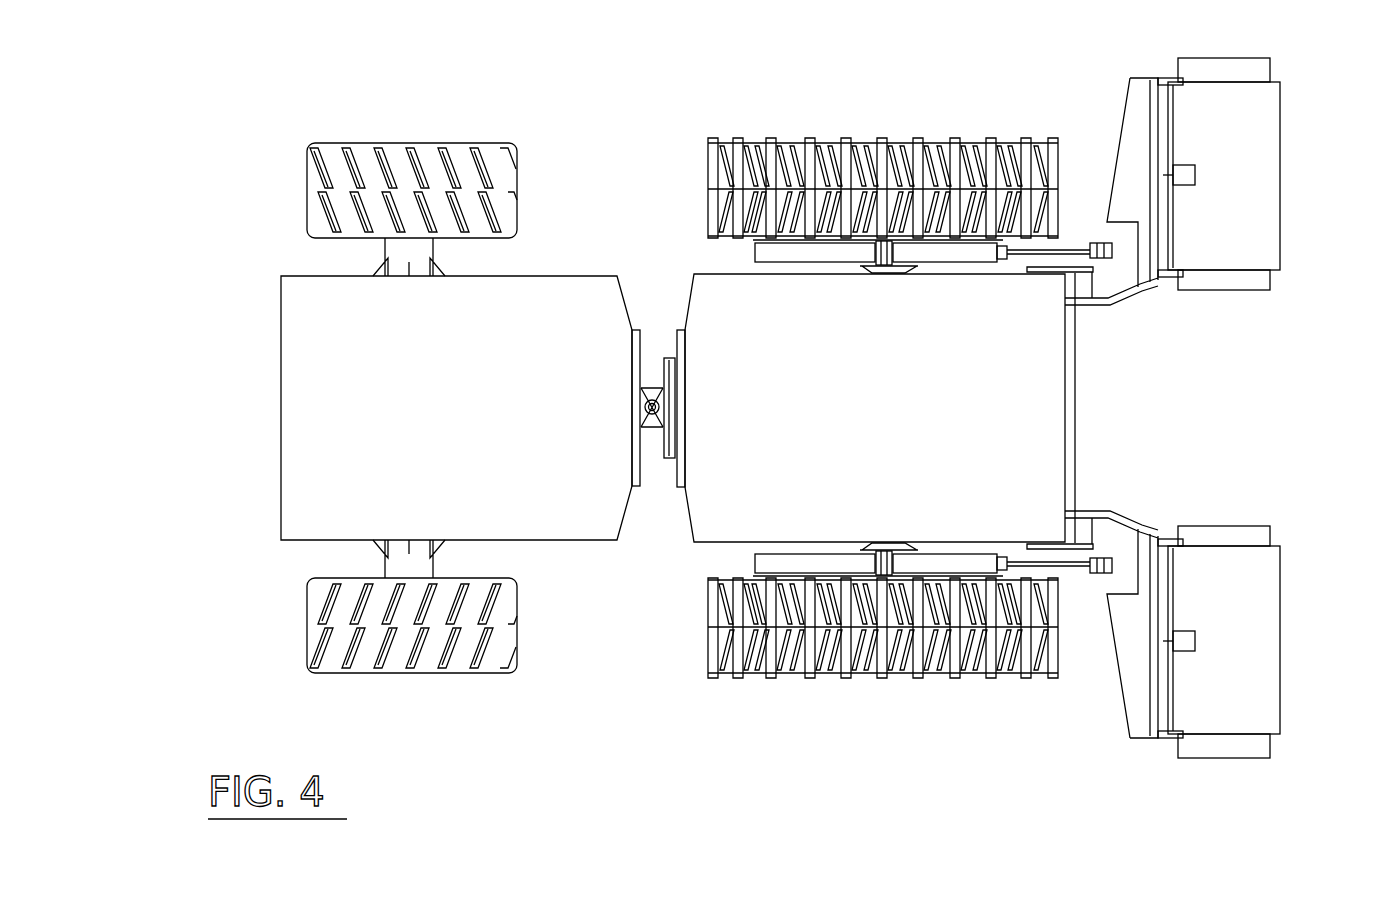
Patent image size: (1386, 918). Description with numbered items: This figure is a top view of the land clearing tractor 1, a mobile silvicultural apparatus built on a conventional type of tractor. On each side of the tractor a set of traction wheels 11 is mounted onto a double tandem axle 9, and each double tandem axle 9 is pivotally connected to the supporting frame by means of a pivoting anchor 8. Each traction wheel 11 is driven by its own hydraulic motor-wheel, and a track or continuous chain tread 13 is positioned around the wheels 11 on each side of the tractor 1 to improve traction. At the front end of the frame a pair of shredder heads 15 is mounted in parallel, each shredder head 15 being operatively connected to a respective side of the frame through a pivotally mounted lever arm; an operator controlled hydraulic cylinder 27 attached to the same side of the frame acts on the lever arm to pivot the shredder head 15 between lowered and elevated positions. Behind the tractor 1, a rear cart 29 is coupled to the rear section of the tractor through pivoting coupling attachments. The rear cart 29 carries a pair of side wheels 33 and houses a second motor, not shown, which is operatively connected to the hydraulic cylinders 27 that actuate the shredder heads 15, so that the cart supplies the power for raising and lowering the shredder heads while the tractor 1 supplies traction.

The land clearing tractor 1 is at (960, 460).
The pivoting anchor 8 is at (903, 273).
The double tandem axle 9 is at (750, 253).
The traction wheels 11 is at (752, 138).
The continuous chain tread 13 is at (812, 138).
The shredder heads 15 is at (1281, 158).
The hydraulic cylinder 27 is at (1073, 258).
The rear cart 29 is at (449, 410).
The side wheels 33 is at (472, 143).